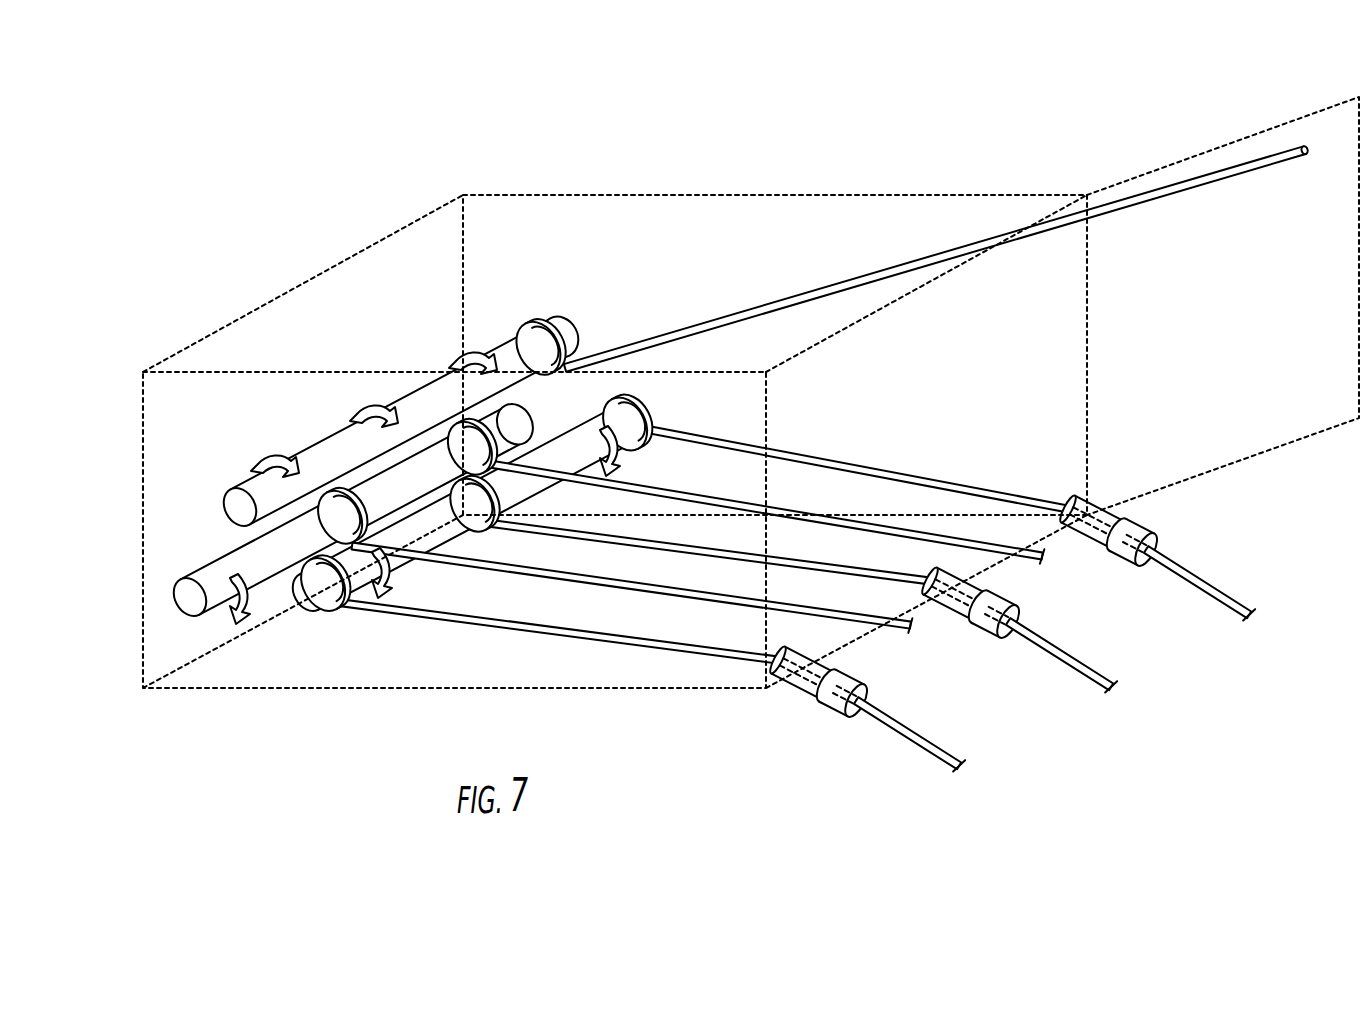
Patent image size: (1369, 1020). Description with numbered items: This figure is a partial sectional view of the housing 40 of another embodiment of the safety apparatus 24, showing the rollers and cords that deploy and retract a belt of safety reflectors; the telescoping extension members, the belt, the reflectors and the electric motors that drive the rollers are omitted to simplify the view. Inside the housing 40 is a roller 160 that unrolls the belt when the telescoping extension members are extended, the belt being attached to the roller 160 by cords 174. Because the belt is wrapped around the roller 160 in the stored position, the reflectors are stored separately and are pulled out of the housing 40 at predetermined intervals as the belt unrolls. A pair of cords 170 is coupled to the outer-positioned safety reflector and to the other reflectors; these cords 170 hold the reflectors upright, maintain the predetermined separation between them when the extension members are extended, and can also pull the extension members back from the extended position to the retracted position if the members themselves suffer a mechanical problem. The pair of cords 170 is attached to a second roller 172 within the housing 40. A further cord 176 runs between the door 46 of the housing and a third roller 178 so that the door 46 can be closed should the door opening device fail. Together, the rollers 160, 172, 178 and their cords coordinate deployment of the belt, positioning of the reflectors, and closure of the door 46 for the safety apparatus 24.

The safety apparatus 24 is at (722, 162).
The housing 40 is at (603, 195).
The door 46 is at (1258, 450).
The roller 160 is at (305, 612).
The pair of cords 170 is at (1040, 562).
The roller 172 is at (193, 610).
The cords 174 is at (820, 565).
The cord 176 is at (1178, 188).
The roller 178 is at (560, 328).